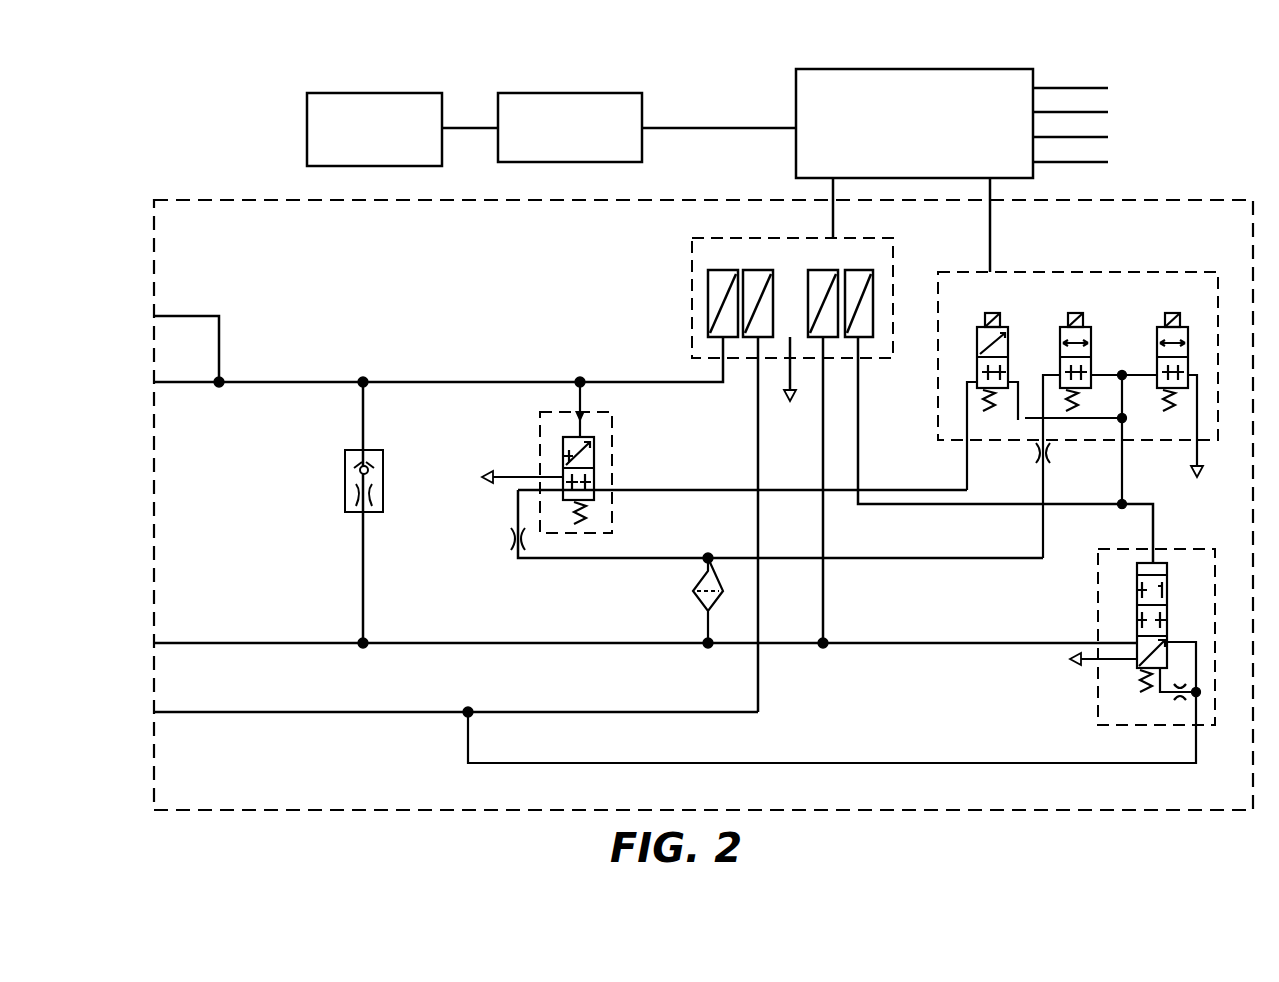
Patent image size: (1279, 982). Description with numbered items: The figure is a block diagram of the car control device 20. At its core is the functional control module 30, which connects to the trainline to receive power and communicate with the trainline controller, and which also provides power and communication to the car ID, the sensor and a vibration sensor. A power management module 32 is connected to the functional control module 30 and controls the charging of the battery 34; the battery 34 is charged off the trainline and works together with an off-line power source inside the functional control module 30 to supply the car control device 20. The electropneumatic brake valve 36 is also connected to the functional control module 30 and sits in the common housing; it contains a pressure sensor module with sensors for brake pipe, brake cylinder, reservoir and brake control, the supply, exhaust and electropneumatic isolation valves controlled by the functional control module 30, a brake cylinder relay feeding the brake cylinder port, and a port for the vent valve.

The car control device 20 is at (196, 140).
The functional control module 30 is at (795, 168).
The power management module 32 is at (625, 146).
The battery 34 is at (307, 133).
The electropneumatic brake valve 36 is at (240, 198).